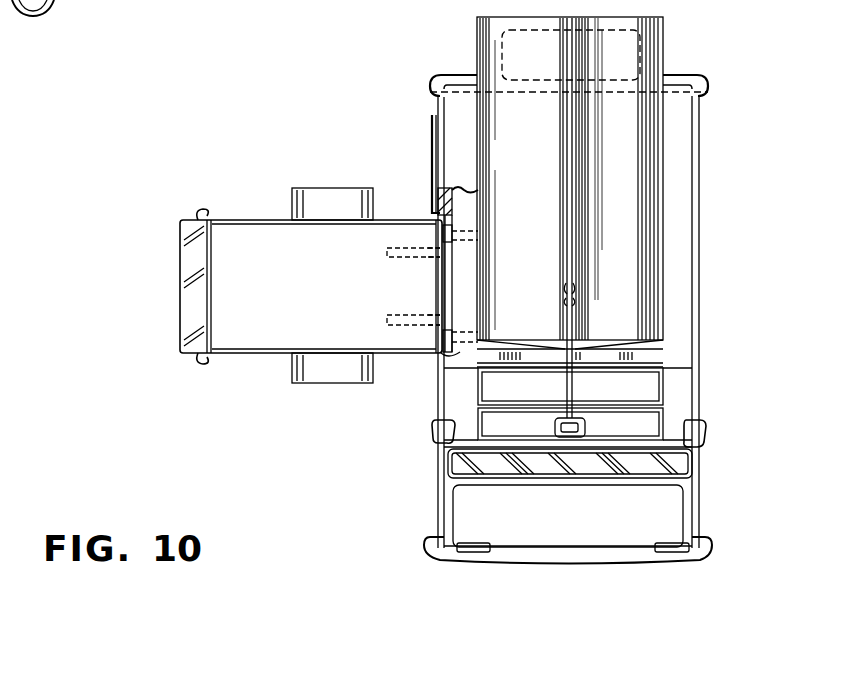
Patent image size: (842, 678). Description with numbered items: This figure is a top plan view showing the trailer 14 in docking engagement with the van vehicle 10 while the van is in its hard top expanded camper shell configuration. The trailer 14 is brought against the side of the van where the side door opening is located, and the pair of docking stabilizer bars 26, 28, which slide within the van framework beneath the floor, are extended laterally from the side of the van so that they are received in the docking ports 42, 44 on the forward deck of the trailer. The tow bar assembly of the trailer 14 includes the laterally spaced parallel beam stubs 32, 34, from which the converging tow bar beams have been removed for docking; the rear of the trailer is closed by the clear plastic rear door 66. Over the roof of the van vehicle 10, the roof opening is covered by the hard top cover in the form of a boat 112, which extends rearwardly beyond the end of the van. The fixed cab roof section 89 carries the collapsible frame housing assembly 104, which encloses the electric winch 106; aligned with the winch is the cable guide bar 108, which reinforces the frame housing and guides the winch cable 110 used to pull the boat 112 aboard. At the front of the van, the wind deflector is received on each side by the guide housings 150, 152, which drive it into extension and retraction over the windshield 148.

The van vehicle 10 is at (708, 182).
The trailer 14 is at (246, 219).
The left docking stabilizer bar 26 is at (387, 249).
The right docking stabilizer bar 28 is at (387, 316).
The parallel beam stub 32 is at (449, 233).
The parallel beam stub 34 is at (447, 356).
The docking port 42 is at (426, 258).
The docking port 44 is at (424, 325).
The rear door 66 is at (190, 304).
The cab roof section 89 is at (460, 398).
The frame housing assembly 104 is at (668, 382).
The electric winch 106 is at (555, 428).
The cable guide bar 108 is at (565, 390).
The winch cable 110 is at (573, 381).
The boat 112 is at (664, 121).
The windshield 148 is at (666, 466).
The guide housing 150 is at (434, 434).
The guide housing 152 is at (704, 431).